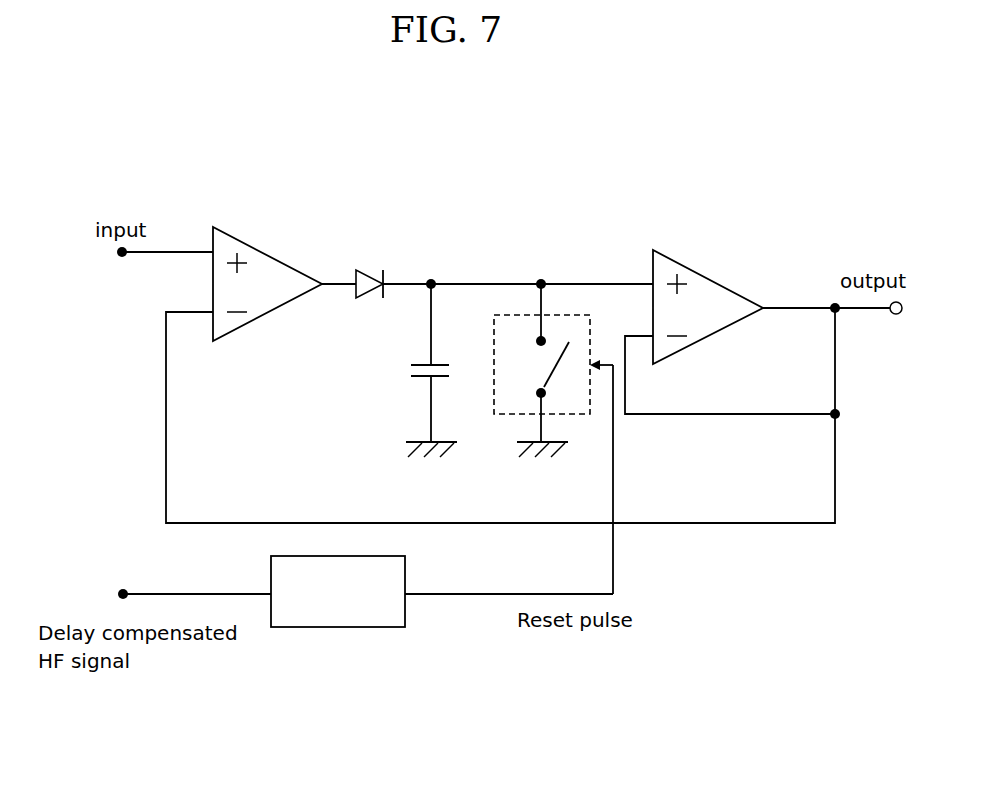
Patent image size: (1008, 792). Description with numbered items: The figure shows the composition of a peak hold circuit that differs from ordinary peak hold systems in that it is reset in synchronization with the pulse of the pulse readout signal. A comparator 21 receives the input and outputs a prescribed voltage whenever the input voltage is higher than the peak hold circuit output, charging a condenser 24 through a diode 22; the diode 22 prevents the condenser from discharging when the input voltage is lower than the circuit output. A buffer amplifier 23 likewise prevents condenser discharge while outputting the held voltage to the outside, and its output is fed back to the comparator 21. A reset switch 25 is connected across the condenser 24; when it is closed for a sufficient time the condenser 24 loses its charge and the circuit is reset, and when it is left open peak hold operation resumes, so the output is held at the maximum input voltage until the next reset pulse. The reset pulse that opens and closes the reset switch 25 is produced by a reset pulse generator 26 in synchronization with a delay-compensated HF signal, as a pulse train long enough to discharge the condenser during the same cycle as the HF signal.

The comparator 21 is at (270, 271).
The diode 22 is at (375, 280).
The buffer amplifier 23 is at (698, 292).
The condenser 24 is at (407, 377).
The reset switch 25 is at (516, 392).
The reset pulse generator 26 is at (327, 610).